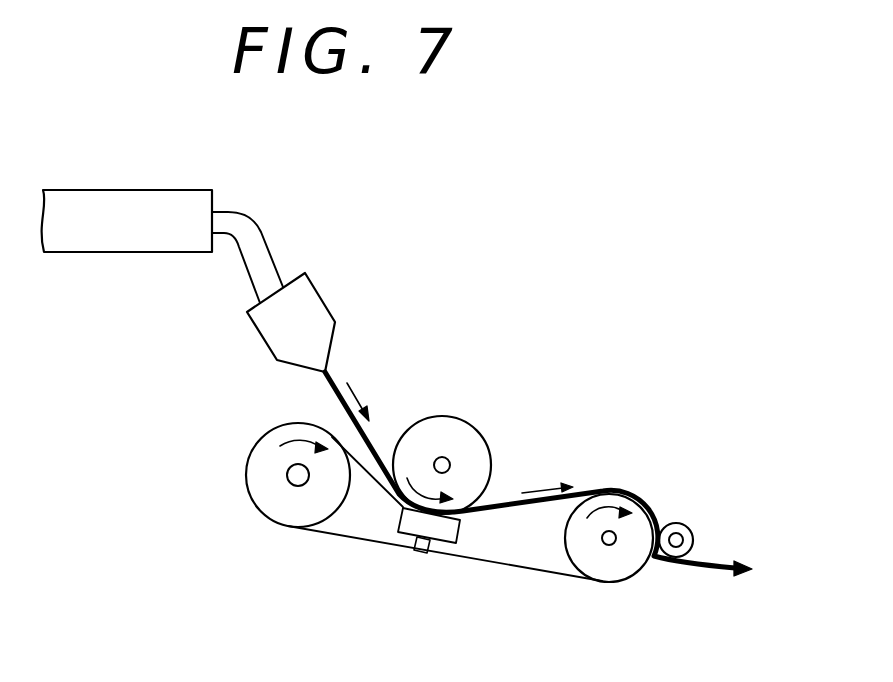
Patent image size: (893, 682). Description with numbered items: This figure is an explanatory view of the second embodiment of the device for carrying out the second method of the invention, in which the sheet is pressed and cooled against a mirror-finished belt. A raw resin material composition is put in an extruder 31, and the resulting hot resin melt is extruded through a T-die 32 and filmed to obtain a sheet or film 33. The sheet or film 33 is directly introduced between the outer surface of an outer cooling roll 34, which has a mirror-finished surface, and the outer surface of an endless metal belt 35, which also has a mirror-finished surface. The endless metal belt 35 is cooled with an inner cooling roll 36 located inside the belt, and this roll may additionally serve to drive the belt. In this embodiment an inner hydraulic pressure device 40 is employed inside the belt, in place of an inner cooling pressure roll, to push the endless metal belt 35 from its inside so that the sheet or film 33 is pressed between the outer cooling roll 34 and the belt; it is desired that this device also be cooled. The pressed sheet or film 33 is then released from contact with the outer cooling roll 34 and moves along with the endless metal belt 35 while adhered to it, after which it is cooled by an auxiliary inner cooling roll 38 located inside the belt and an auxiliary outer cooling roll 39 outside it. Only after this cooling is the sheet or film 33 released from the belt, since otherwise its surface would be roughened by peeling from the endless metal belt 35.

The extruder 31 is at (112, 193).
The T-die 32 is at (322, 295).
The sheet or film 33 is at (372, 437).
The outer cooling roll 34 is at (468, 428).
The endless metal belt 35 is at (355, 543).
The inner cooling roll 36 is at (246, 470).
The auxiliary inner cooling roll 38 is at (633, 508).
The auxiliary outer cooling roll 39 is at (683, 523).
The hydraulic pressure device 40 is at (460, 530).